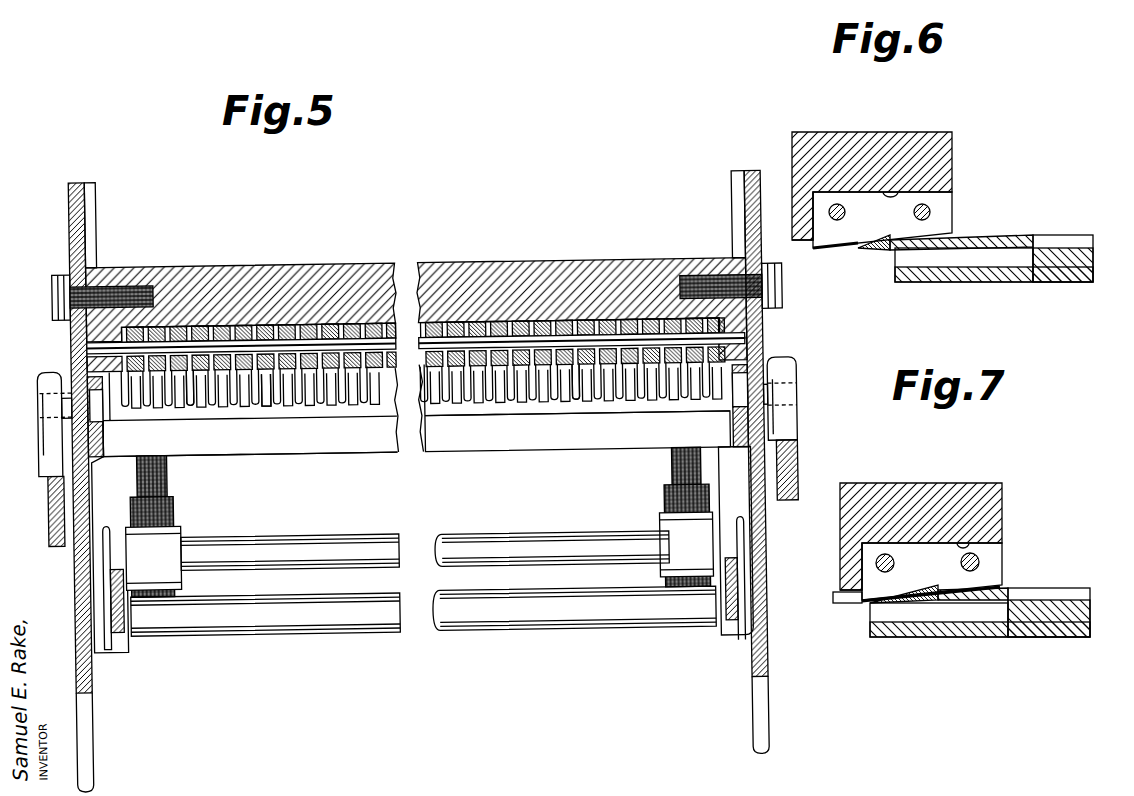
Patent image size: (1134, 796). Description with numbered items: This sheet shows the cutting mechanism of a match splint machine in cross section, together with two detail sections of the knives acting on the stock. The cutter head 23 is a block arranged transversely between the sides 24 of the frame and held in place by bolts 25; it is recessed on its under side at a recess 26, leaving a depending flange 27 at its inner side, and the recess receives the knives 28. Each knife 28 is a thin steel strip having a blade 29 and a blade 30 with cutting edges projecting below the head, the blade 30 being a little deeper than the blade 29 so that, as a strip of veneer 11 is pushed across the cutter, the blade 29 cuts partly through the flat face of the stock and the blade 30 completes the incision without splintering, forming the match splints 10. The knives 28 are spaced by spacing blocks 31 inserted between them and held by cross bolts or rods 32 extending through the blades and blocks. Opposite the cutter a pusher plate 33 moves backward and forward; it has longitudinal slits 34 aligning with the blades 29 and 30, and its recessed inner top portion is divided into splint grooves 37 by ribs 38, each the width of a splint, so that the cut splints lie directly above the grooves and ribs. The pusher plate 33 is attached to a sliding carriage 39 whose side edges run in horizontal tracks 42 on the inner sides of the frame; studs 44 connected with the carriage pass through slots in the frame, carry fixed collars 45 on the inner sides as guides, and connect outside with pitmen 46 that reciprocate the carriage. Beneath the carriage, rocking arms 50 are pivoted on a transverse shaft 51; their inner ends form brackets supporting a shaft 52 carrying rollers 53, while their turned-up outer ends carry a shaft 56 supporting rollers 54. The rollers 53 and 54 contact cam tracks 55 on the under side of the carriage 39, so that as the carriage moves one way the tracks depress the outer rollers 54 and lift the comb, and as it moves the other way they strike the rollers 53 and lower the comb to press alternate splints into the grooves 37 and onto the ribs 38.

In FIG. 7, the match splints 10 is at (835, 600).
In FIG. 6, the strips of veneer 11 is at (1018, 235).
In FIG. 7, the strips of veneer 11 is at (1018, 590).
In FIG. 5, the cutter head 23 is at (327, 274).
In FIG. 6, the cutter head 23 is at (884, 148).
In FIG. 7, the cutter head 23 is at (930, 482).
In FIG. 5, the sides of the frame 24 is at (752, 198).
In FIG. 5, the bolts 25 is at (54, 285).
In FIG. 6, the recess 26 is at (902, 187).
In FIG. 7, the recess 26 is at (992, 523).
In FIG. 6, the depending flange 27 is at (798, 220).
In FIG. 7, the depending flange 27 is at (842, 557).
In FIG. 5, the knives 28 is at (584, 380).
In FIG. 6, the knives 28 is at (943, 210).
In FIG. 7, the knives 28 is at (992, 553).
In FIG. 6, the blade 29 is at (895, 250).
In FIG. 7, the blade 29 is at (943, 605).
In FIG. 6, the blade 30 is at (832, 252).
In FIG. 7, the blade 30 is at (863, 607).
In FIG. 5, the spacing blocks 31 is at (508, 341).
In FIG. 5, the cross bolts or rods 32 is at (569, 344).
In FIG. 6, the cross bolts or rods 32 is at (837, 204).
In FIG. 5, the pusher plate 33 is at (467, 408).
In FIG. 6, the pusher plate 33 is at (1053, 272).
In FIG. 7, the pusher plate 33 is at (1047, 627).
In FIG. 6, the longitudinal slits 34 is at (1072, 243).
In FIG. 7, the longitudinal slits 34 is at (1067, 595).
In FIG. 5, the splint grooves 37 is at (193, 397).
In FIG. 5, the ribs 38 is at (268, 393).
In FIG. 5, the sliding carriage 39 is at (633, 441).
In FIG. 5, the horizontal tracks 42 is at (96, 456).
In FIG. 5, the studs 44 is at (70, 400).
In FIG. 5, the fixed collars 45 is at (100, 405).
In FIG. 5, the pitmen 46 is at (49, 455).
In FIG. 5, the rocking arms 50 is at (129, 631).
In FIG. 5, the transverse shaft 51 is at (580, 620).
In FIG. 5, the shaft 52 is at (448, 539).
In FIG. 5, the rollers 53 is at (676, 511).
In FIG. 5, the rollers 54 is at (161, 533).
In FIG. 5, the cam tracks 55 is at (672, 476).
In FIG. 5, the shaft 56 is at (164, 480).